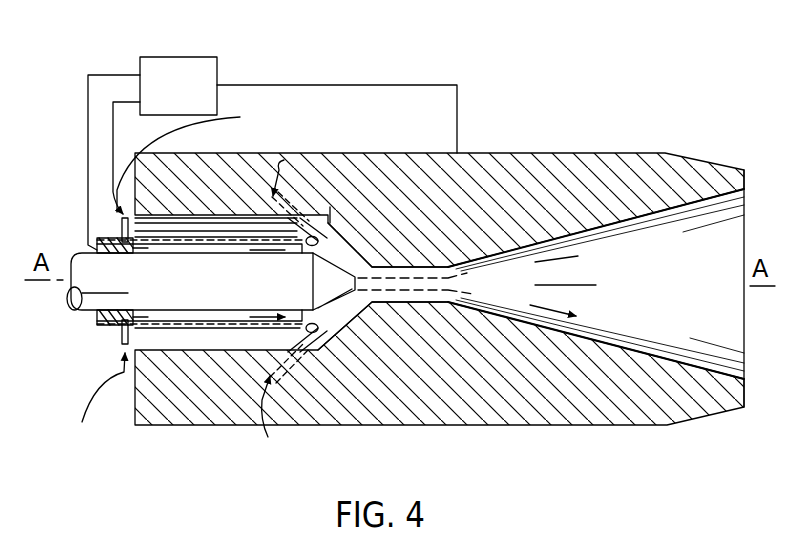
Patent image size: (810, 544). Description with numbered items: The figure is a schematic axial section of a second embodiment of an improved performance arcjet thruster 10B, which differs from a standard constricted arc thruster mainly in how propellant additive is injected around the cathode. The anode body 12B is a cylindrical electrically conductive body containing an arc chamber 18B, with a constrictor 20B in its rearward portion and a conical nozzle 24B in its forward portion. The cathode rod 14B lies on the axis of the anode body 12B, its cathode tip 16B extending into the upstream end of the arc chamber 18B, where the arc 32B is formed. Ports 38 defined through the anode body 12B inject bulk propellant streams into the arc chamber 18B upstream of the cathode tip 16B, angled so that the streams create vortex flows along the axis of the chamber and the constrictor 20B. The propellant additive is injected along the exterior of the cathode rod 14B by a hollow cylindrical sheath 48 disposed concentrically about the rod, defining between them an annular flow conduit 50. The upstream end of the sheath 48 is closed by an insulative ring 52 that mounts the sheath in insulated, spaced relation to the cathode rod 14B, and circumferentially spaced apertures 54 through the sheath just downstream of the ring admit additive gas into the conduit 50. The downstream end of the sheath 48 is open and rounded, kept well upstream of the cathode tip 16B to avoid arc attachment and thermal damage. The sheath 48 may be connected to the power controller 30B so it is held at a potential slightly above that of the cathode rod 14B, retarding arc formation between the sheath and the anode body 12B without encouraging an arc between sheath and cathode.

The arcjet thruster 10B is at (630, 110).
The anode body 12B is at (492, 148).
The cathode rod 14B is at (85, 313).
The cathode tip 16B is at (343, 312).
The arc chamber 18B is at (343, 246).
The constrictor 20B is at (445, 315).
The nozzle 24B is at (637, 160).
The power controller 30B is at (205, 57).
The arc 32B is at (478, 297).
The ports 38 is at (330, 222).
The sheath 48 is at (318, 289).
The annular flow conduit 50 is at (227, 247).
The insulative ring 52 is at (97, 243).
The apertures 54 is at (118, 340).